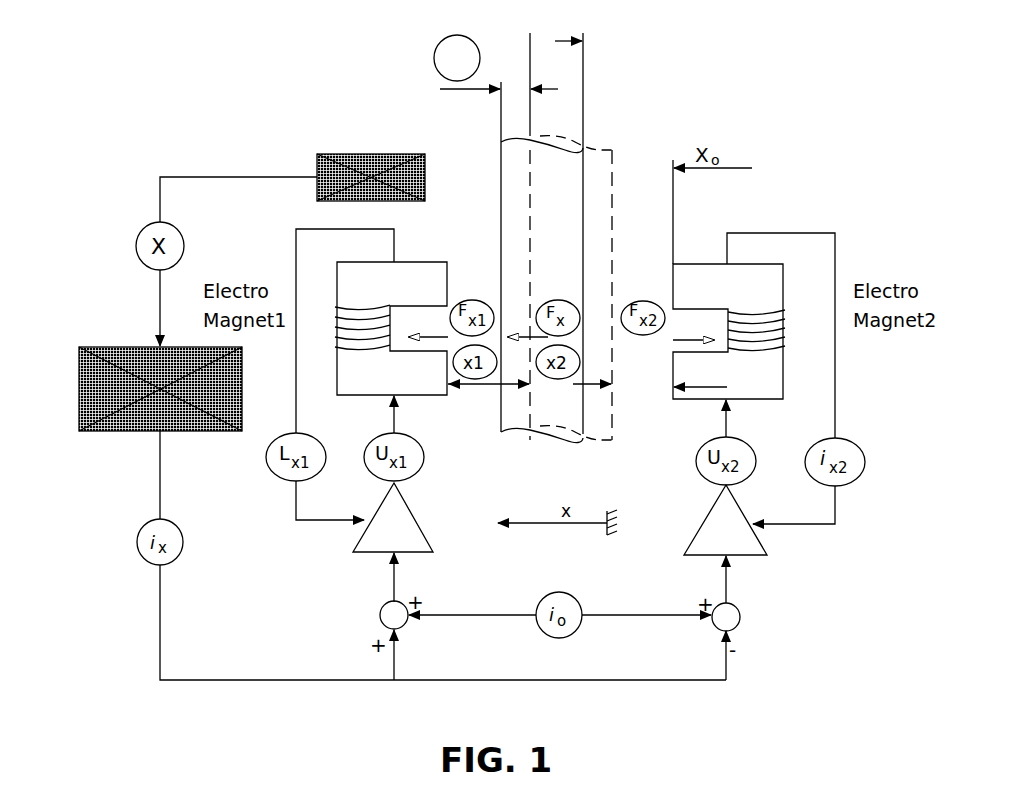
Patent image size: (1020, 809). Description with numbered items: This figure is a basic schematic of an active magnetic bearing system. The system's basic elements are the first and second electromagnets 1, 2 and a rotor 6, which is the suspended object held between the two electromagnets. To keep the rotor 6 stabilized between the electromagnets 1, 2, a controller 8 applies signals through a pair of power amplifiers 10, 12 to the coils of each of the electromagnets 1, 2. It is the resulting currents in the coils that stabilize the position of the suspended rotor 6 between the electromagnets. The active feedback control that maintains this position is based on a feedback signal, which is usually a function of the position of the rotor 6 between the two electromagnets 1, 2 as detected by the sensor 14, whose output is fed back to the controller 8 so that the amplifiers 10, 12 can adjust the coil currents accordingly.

The first electromagnet 1 is at (430, 273).
The second electromagnet 2 is at (760, 275).
The rotor 6 is at (518, 150).
The controller 8 is at (212, 432).
The power amplifier 10 is at (400, 512).
The power amplifier 12 is at (730, 516).
The sensor 14 is at (318, 160).